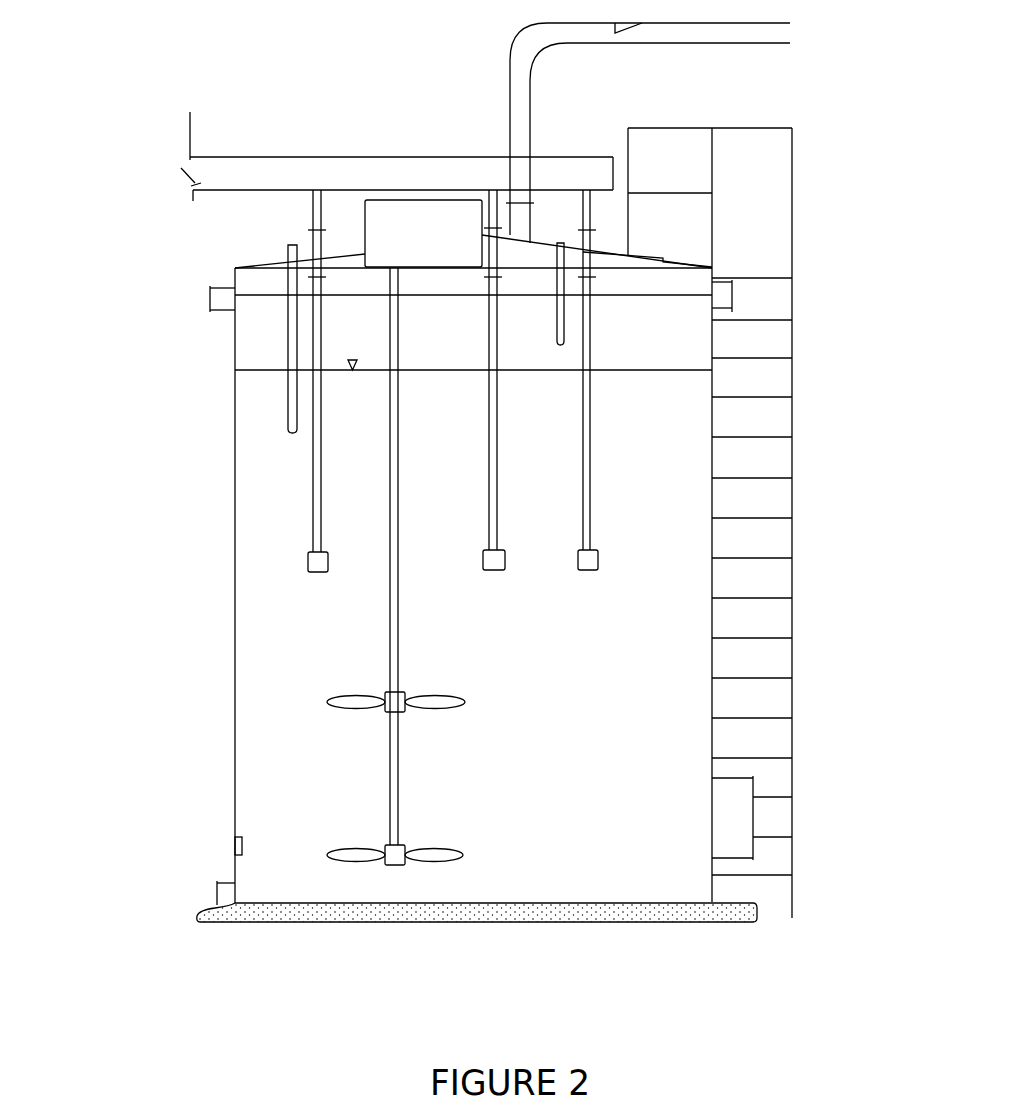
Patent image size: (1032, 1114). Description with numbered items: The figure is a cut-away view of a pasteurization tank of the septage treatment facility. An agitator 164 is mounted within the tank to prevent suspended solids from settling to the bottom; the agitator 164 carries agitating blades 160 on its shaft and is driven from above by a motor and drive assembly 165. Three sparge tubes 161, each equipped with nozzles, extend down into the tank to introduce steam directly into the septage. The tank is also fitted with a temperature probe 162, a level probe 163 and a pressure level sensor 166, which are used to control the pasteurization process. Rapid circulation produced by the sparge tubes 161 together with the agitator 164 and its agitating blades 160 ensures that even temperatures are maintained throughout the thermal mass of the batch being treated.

The agitating blades 160 is at (471, 843).
The sparge tubes 161 is at (576, 558).
The temperature probe 162 is at (280, 252).
The level probe 163 is at (568, 343).
The agitator 164 is at (390, 810).
The motor and drive assembly 165 is at (380, 223).
The pressure level sensor 166 is at (232, 842).